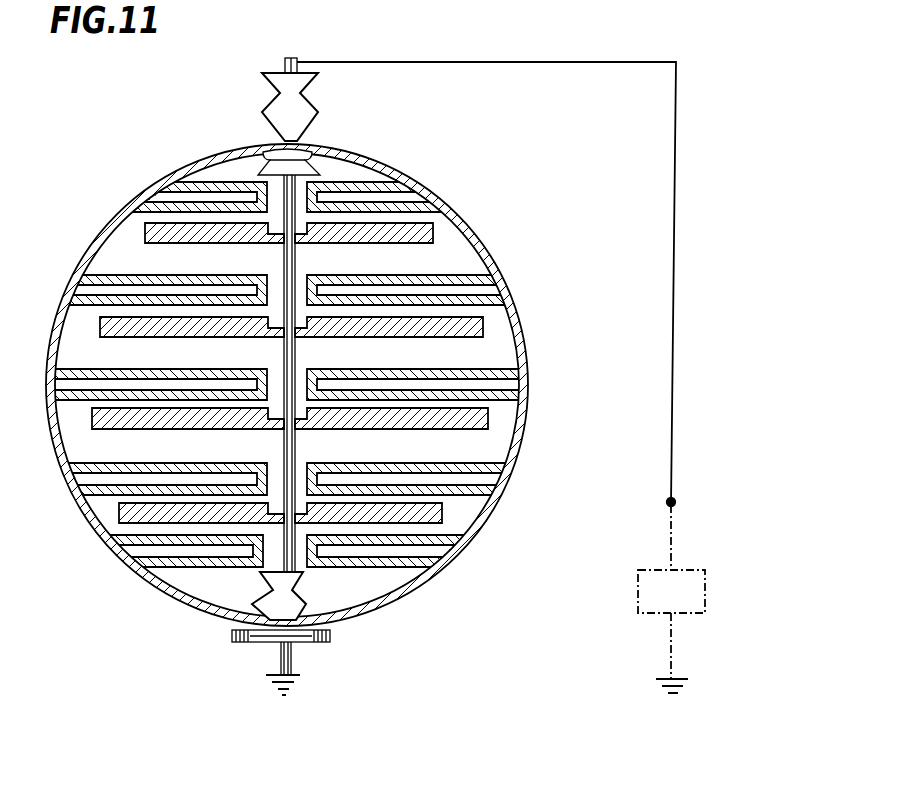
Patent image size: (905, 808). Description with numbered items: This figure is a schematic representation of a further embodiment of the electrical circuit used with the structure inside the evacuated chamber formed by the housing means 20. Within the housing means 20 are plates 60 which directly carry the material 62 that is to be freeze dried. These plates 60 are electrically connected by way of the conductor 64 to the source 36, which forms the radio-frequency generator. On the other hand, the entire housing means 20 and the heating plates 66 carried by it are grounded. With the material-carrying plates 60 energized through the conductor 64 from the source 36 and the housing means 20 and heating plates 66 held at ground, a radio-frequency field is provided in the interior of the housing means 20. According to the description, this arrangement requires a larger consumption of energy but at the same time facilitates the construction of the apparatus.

The housing means 20 is at (183, 607).
The source 36 is at (706, 608).
The plates 60 is at (368, 246).
The material 62 is at (435, 231).
The conductor 64 is at (472, 62).
The heating plates 66 is at (415, 553).